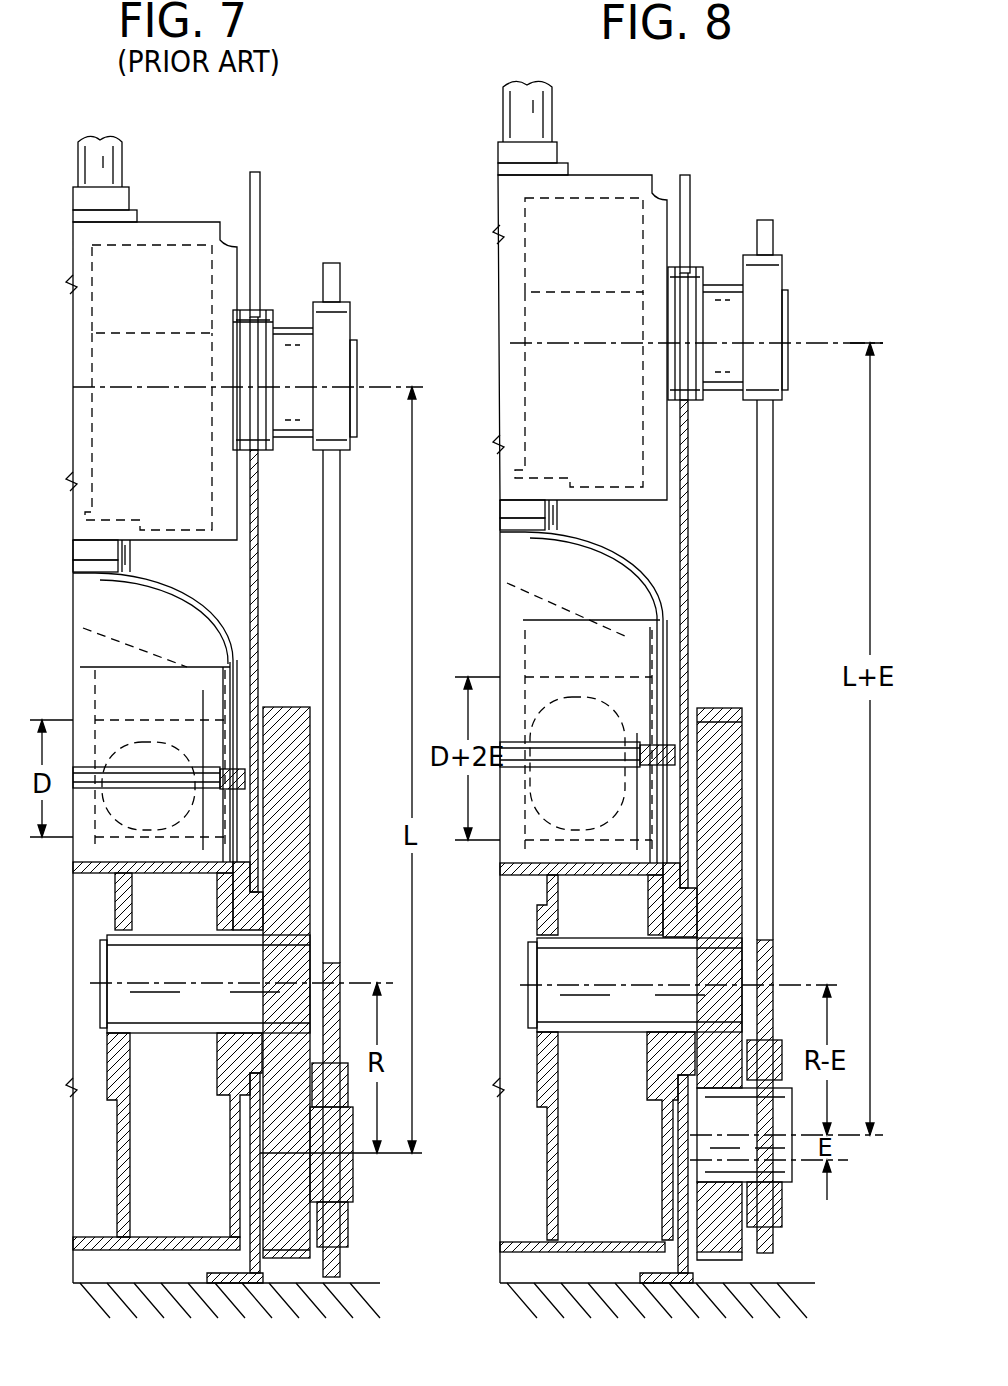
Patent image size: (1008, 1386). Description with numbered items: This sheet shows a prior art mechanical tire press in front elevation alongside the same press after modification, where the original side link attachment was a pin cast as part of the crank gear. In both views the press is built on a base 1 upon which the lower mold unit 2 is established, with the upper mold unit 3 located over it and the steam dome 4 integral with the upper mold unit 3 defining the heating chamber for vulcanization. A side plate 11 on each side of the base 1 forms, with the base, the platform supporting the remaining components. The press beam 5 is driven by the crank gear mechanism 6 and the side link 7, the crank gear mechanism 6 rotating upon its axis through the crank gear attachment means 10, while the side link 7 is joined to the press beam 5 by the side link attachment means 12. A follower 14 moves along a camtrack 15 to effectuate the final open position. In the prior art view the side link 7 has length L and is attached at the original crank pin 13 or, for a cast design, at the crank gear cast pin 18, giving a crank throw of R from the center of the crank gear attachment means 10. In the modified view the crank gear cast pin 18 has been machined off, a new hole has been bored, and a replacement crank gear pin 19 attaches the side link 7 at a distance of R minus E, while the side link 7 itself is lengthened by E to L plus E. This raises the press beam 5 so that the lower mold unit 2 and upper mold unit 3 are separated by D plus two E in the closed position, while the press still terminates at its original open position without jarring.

In FIG. 7, the base 1 is at (77, 850).
In FIG. 8, the base 1 is at (517, 855).
In FIG. 7, the lower mold unit 2 is at (257, 810).
In FIG. 8, the lower mold unit 2 is at (673, 798).
In FIG. 7, the upper mold unit 3 is at (257, 703).
In FIG. 8, the upper mold unit 3 is at (650, 697).
In FIG. 7, the steam dome 4 is at (230, 633).
In FIG. 8, the steam dome 4 is at (662, 588).
In FIG. 7, the press beam 5 is at (178, 220).
In FIG. 8, the press beam 5 is at (630, 175).
In FIG. 7, the crank gear mechanism 6 is at (263, 705).
In FIG. 8, the crank gear mechanism 6 is at (717, 702).
In FIG. 7, the side link 7 is at (333, 263).
In FIG. 8, the side link 7 is at (775, 478).
In FIG. 7, the crank gear attachment means 10 is at (280, 983).
In FIG. 8, the crank gear attachment means 10 is at (713, 985).
In FIG. 7, the side plate 11 is at (260, 180).
In FIG. 8, the side plate 11 is at (690, 200).
In FIG. 7, the side link attachment means 12 is at (303, 387).
In FIG. 8, the side link attachment means 12 is at (713, 340).
In FIG. 7, the original crank pin 13 is at (353, 1180).
In FIG. 8, the original crank pin 13 is at (798, 1160).
In FIG. 7, the follower 14 is at (257, 317).
In FIG. 8, the follower 14 is at (690, 270).
In FIG. 7, the camtrack 15 is at (255, 215).
In FIG. 8, the camtrack 15 is at (692, 203).
In FIG. 7, the crank gear cast pin 18 is at (345, 1122).
In FIG. 8, the replacement crank gear pin 19 is at (782, 1108).